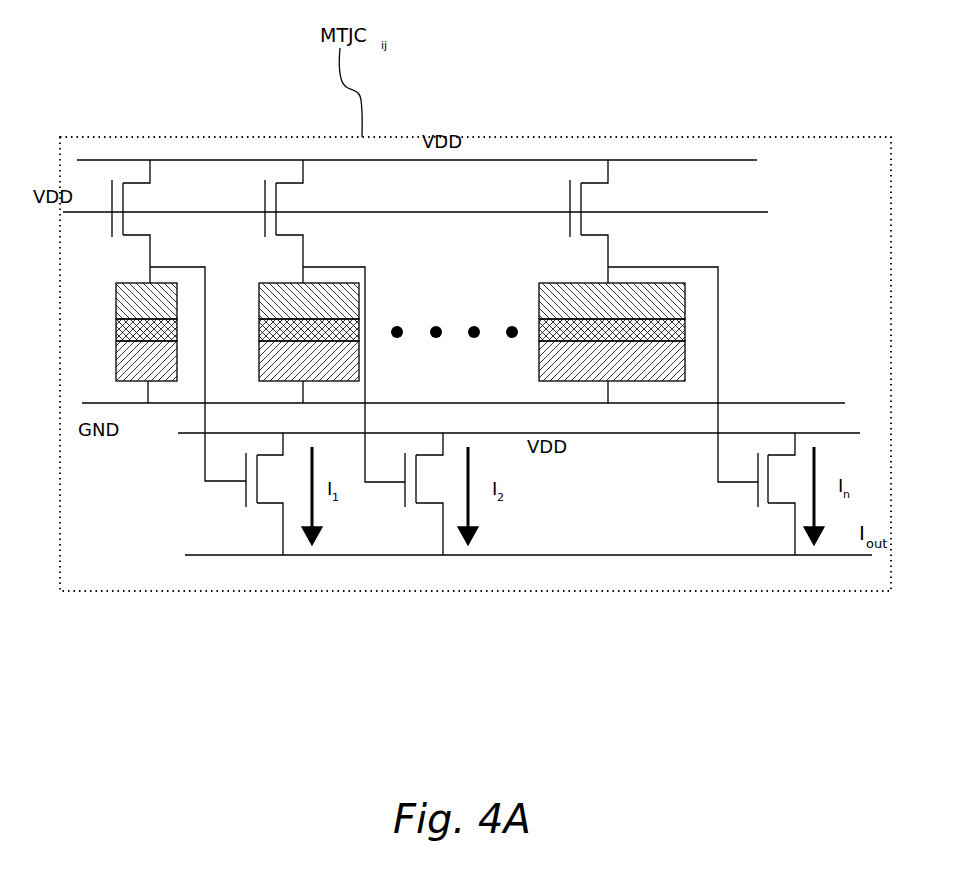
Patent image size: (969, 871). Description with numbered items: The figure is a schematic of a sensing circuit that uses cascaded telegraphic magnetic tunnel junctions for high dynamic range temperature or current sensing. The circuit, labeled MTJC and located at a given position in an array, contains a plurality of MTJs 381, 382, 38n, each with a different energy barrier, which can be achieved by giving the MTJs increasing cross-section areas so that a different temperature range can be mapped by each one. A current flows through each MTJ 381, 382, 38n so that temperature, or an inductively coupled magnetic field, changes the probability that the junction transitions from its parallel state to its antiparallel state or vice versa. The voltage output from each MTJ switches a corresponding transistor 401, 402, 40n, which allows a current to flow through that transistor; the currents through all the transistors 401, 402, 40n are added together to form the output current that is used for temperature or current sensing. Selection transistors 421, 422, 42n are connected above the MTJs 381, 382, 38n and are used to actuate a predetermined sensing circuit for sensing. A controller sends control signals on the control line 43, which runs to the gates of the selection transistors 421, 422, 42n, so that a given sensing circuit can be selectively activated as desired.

The selection transistor 421 is at (112, 198).
The selection transistor 422 is at (275, 198).
The selection transistor 42n is at (591, 182).
The control line 43 is at (743, 212).
The MTJ 381 is at (137, 370).
The MTJ 382 is at (273, 377).
The MTJ 38n is at (642, 363).
The transistor 401 is at (270, 502).
The transistor 402 is at (425, 505).
The transistor 40n is at (772, 502).